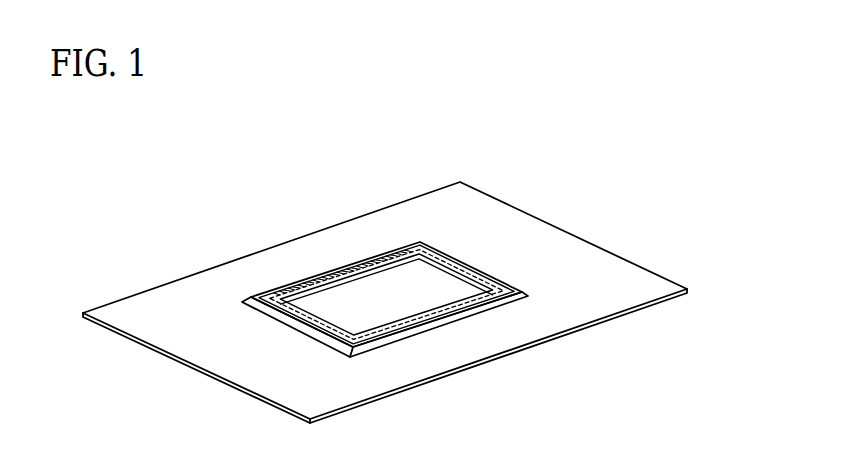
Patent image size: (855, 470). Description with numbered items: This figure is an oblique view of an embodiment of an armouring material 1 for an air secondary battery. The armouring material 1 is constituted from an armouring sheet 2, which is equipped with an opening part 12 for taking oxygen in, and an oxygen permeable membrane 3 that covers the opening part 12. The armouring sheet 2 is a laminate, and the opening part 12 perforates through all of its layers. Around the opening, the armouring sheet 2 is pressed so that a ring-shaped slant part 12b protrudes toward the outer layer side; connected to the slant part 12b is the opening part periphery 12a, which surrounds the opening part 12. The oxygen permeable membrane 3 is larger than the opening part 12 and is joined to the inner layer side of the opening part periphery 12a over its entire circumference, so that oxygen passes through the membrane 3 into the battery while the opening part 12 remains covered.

The armouring material 1 is at (583, 165).
The armouring sheet 2 is at (621, 270).
The oxygen permeable membrane 3 is at (453, 257).
The opening part 12 is at (392, 255).
The opening part periphery 12a is at (319, 277).
The slant part 12b is at (275, 317).